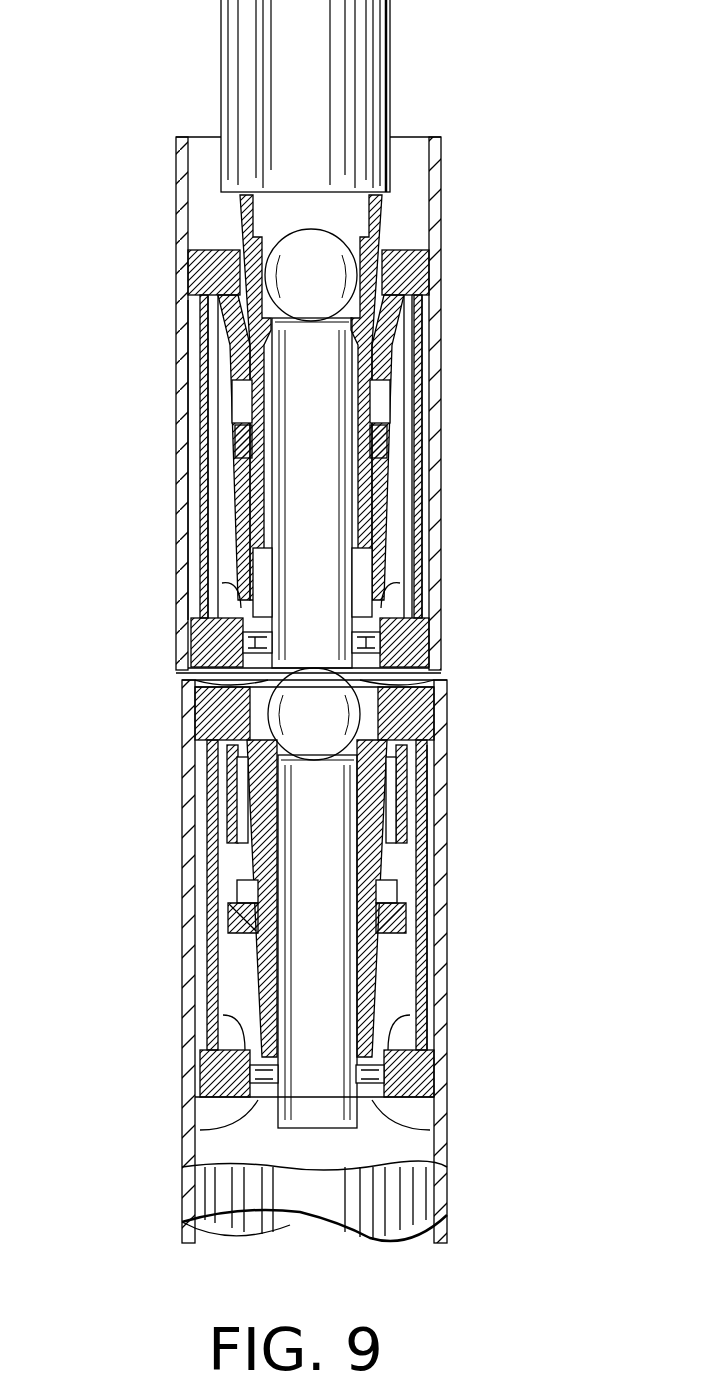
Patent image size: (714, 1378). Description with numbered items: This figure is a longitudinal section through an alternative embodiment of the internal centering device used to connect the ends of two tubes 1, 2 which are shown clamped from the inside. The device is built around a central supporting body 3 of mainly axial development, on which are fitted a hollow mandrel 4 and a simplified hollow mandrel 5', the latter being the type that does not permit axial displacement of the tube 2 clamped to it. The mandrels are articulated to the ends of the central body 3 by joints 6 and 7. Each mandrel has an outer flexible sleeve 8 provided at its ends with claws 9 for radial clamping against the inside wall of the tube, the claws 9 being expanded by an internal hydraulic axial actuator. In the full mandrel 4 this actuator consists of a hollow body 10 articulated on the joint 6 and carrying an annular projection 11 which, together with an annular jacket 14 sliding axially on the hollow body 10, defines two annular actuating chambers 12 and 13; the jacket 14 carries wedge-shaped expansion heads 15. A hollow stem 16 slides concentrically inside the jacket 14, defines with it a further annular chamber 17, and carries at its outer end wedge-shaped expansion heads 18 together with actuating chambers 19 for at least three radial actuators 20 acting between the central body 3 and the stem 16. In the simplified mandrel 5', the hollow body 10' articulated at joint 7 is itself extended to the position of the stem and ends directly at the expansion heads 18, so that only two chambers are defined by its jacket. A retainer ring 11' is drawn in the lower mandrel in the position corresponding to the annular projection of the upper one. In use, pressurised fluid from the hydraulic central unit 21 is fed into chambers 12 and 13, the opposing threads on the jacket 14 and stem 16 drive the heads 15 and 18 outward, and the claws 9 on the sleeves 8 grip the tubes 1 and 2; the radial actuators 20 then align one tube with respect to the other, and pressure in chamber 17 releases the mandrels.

The tube 1 is at (177, 216).
The tube 2 is at (184, 944).
The central supporting body 3 is at (297, 497).
The hollow mandrel 4 is at (193, 534).
The hollow mandrel 5' is at (466, 897).
The joint 6 is at (411, 321).
The joint 7 is at (345, 705).
The outer flexible sleeve 8 is at (201, 360).
The claws 9 is at (190, 257).
The hollow body 10 is at (184, 440).
The hollow body 10' is at (400, 898).
The annular projection 11 is at (460, 384).
The retainer ring 11' is at (274, 906).
The annular actuating chamber 12 is at (212, 318).
The annular actuating chamber 13 is at (400, 404).
The annular jacket 14 is at (223, 386).
The wedge-shaped expansion heads 15 is at (180, 297).
The hollow stem 16 is at (386, 545).
The annular actuating chamber 17 is at (415, 454).
The wedge-shaped expansion heads 18 is at (208, 616).
The actuating chambers 19 is at (234, 583).
The radial actuators 20 is at (182, 684).
The hydraulic central unit 21 is at (373, 80).